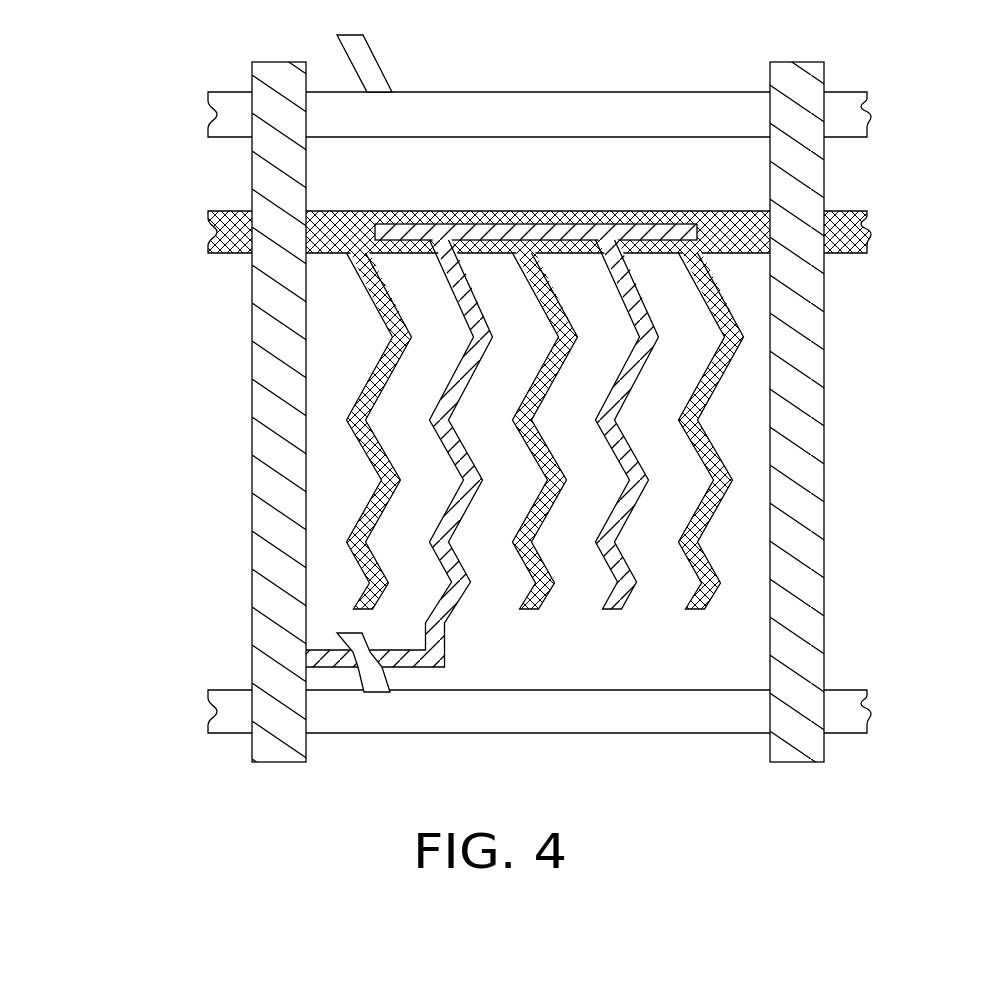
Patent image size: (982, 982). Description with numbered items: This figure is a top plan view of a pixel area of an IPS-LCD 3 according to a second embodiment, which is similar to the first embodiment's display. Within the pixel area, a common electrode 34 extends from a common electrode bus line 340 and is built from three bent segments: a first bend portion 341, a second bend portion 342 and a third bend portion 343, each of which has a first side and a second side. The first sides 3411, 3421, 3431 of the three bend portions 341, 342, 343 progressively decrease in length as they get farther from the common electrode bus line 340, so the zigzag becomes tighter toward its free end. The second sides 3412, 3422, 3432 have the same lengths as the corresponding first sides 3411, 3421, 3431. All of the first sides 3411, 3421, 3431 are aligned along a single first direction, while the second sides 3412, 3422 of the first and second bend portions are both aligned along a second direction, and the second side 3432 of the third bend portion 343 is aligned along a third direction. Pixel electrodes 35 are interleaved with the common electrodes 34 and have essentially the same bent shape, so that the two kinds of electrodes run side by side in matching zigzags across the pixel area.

The IPS-LCD 3 is at (457, 403).
The common electrode bus line 340 is at (347, 222).
The common electrode 34 is at (393, 427).
The first bend portion 341 is at (257, 332).
The first side of first bend portion 3411 is at (372, 300).
The second side of first bend portion 3412 is at (368, 387).
The second bend portion 342 is at (251, 481).
The first side of second bend portion 3421 is at (368, 460).
The second side of second bend portion 3422 is at (366, 505).
The third bend portion 343 is at (241, 571).
The first side of third bend portion 3431 is at (363, 558).
The second side of third bend portion 3432 is at (362, 592).
The pixel electrode 35 is at (447, 607).